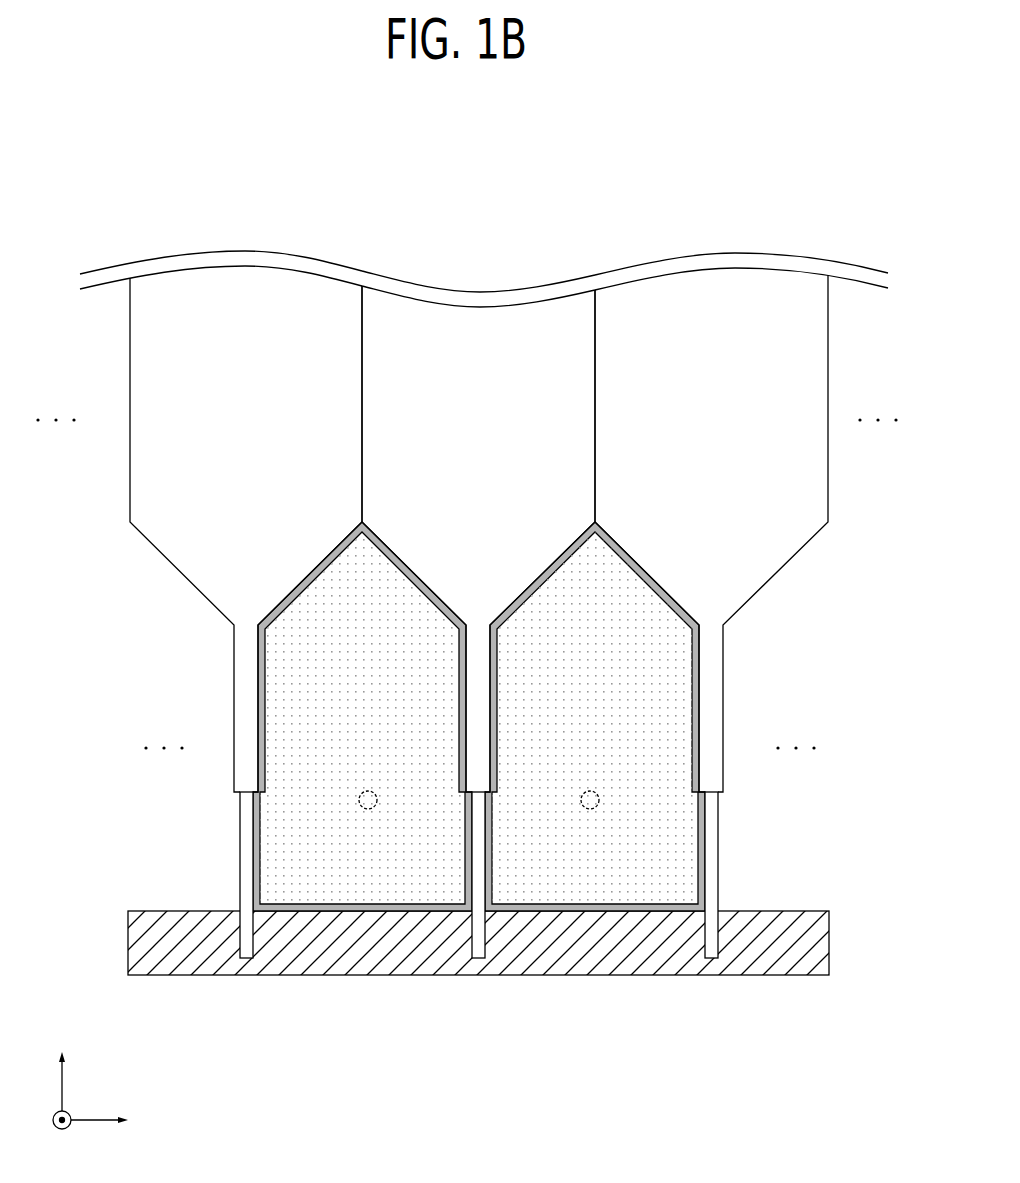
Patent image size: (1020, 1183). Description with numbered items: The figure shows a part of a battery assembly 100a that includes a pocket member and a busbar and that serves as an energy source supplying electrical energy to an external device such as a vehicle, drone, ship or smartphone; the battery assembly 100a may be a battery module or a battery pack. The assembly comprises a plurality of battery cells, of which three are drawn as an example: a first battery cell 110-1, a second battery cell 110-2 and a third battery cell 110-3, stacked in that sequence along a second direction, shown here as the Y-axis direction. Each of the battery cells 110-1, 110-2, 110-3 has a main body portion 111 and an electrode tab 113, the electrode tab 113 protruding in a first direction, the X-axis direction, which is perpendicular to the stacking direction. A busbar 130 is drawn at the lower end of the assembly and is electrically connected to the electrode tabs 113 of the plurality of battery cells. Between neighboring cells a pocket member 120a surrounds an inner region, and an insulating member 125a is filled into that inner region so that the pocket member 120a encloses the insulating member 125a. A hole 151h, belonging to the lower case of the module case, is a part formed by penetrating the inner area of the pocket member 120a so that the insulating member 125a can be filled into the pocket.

The battery assembly 100a is at (104, 151).
The first battery cell 110-1 is at (256, 246).
The second battery cell 110-2 is at (487, 289).
The third battery cell 110-3 is at (747, 246).
The main body portion 111 is at (479, 533).
The electrode tab 113 is at (247, 960).
The pocket member 120a is at (255, 850).
The insulating member 125a is at (268, 883).
The hole 151h is at (358, 800).
The busbar 130 is at (822, 942).